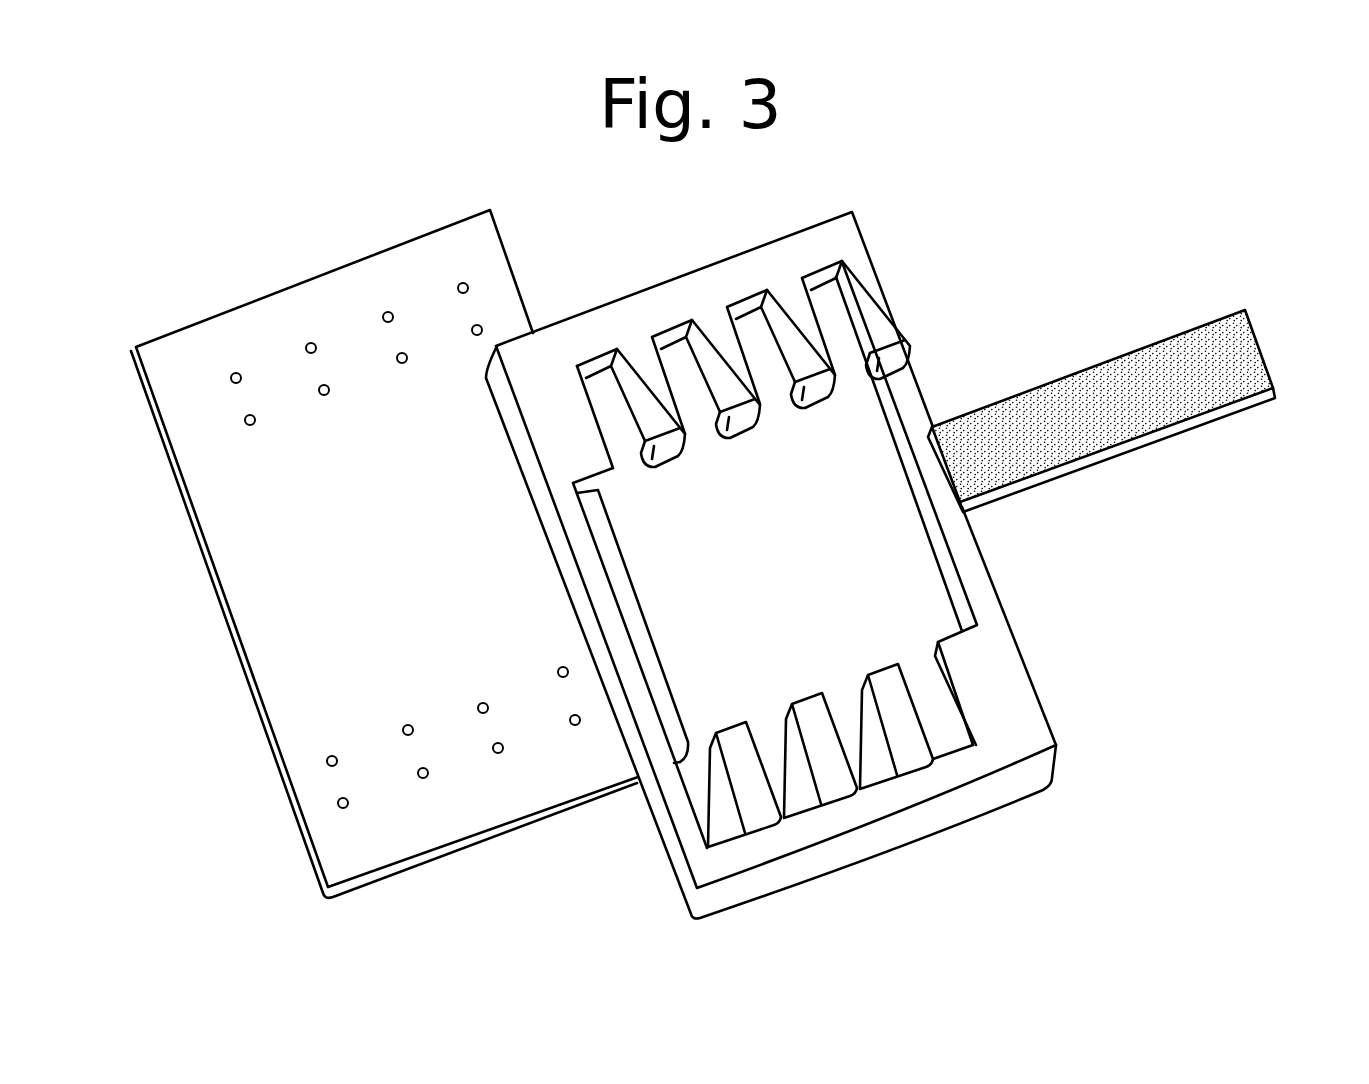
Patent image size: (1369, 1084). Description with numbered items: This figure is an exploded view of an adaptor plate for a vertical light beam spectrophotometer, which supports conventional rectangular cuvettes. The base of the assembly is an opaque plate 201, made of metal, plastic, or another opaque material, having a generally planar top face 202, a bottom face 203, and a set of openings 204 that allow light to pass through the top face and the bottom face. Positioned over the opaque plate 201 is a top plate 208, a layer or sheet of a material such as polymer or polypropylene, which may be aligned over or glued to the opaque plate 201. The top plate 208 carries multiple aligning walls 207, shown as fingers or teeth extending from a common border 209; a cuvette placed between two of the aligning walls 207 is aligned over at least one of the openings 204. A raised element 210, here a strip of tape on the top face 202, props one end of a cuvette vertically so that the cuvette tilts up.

The opaque plate 201 is at (386, 573).
The top face 202 is at (345, 535).
The bottom face 203 is at (611, 803).
The openings 204 is at (429, 775).
The aligning walls 207 is at (718, 343).
The top plate 208 is at (804, 554).
The common border 209 is at (977, 570).
The raised element 210 is at (1127, 425).